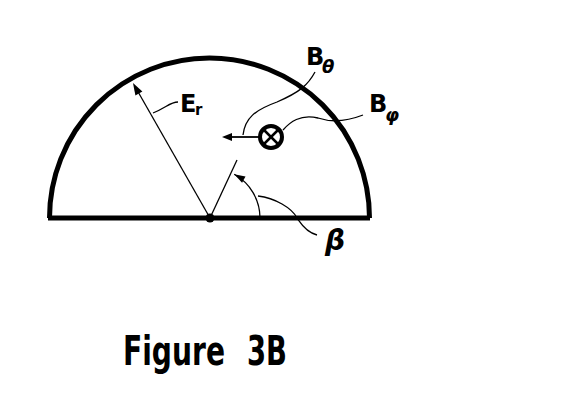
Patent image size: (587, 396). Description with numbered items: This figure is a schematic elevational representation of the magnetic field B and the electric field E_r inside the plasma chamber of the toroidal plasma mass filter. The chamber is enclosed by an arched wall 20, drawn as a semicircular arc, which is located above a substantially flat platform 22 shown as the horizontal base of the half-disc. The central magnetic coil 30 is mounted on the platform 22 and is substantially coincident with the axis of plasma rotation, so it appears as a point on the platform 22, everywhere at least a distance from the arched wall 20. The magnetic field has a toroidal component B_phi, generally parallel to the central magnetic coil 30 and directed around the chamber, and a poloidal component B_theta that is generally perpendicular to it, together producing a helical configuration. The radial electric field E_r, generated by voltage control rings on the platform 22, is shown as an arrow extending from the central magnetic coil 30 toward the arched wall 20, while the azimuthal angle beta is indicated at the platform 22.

The arched wall 20 is at (99, 110).
The platform 22 is at (80, 217).
The central magnetic coil 30 is at (207, 222).